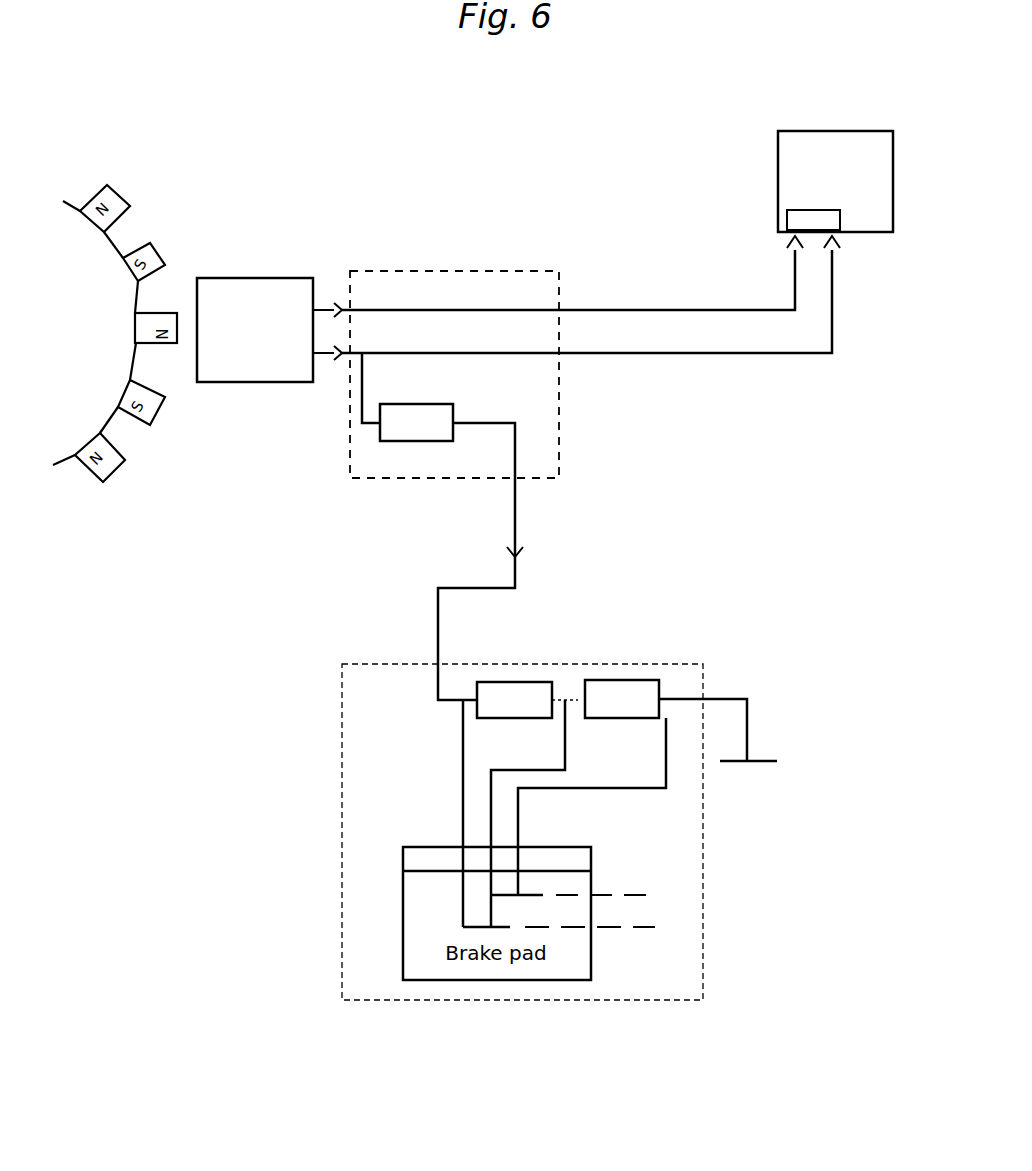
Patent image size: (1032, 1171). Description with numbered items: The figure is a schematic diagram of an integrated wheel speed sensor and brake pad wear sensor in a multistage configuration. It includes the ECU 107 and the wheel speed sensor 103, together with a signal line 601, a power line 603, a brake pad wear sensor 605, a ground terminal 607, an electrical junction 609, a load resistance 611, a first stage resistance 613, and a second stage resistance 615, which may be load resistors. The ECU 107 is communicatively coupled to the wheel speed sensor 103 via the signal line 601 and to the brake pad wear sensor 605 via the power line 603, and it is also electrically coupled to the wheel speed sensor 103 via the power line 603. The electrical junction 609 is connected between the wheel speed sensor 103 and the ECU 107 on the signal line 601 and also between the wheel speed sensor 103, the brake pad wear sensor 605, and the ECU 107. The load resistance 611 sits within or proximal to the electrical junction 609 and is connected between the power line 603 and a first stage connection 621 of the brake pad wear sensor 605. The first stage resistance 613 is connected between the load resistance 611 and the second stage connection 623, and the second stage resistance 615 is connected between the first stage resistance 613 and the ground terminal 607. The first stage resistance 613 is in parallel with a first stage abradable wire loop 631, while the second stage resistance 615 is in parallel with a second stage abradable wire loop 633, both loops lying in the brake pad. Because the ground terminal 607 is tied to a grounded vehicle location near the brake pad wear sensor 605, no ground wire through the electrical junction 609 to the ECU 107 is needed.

The wheel speed sensor 103 is at (245, 383).
The ECU 107 is at (777, 174).
The signal line 601 is at (678, 310).
The power line 603 is at (753, 355).
The brake pad wear sensor 605 is at (342, 812).
The ground terminal 607 is at (748, 740).
The electrical junction 609 is at (559, 456).
The load resistance 611 is at (406, 442).
The first stage resistance 613 is at (542, 680).
The second stage resistance 615 is at (639, 678).
The first stage connection 621 is at (461, 760).
The second stage connection 623 is at (565, 742).
The first stage abradable wire loop 631 is at (584, 925).
The second stage abradable wire loop 633 is at (593, 894).